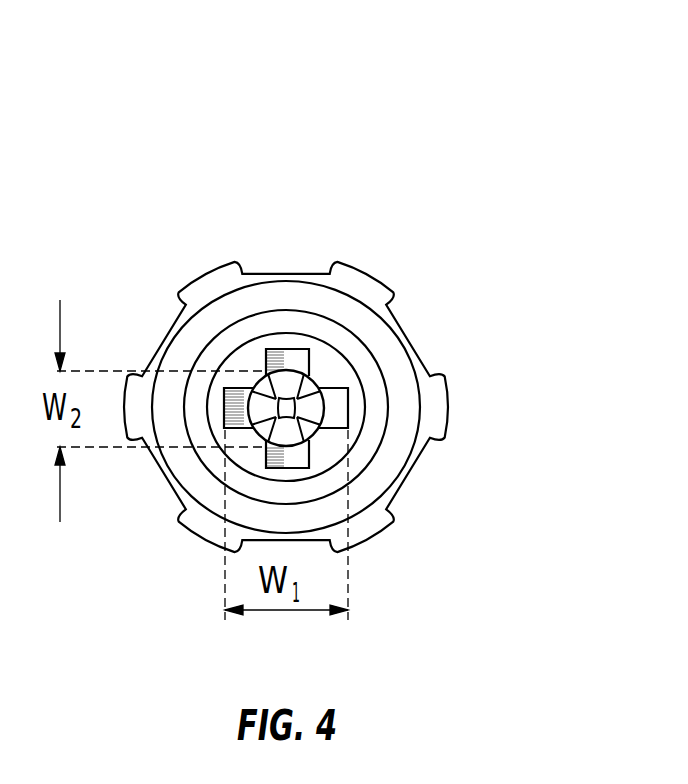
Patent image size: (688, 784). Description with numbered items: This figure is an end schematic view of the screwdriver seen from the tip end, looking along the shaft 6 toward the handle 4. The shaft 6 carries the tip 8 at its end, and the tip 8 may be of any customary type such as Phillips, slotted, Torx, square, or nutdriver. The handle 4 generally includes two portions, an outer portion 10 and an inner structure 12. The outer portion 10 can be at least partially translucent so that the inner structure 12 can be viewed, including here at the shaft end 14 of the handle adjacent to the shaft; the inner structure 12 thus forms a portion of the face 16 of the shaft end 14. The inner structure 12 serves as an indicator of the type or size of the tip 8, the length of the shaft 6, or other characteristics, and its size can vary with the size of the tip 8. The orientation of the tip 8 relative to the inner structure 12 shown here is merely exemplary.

The handle 4 is at (423, 322).
The shaft 6 is at (327, 419).
The tip 8 is at (315, 412).
The outer portion 10 is at (220, 263).
The inner structure 12 is at (350, 408).
The shaft end 14 is at (332, 377).
The face 16 is at (284, 349).